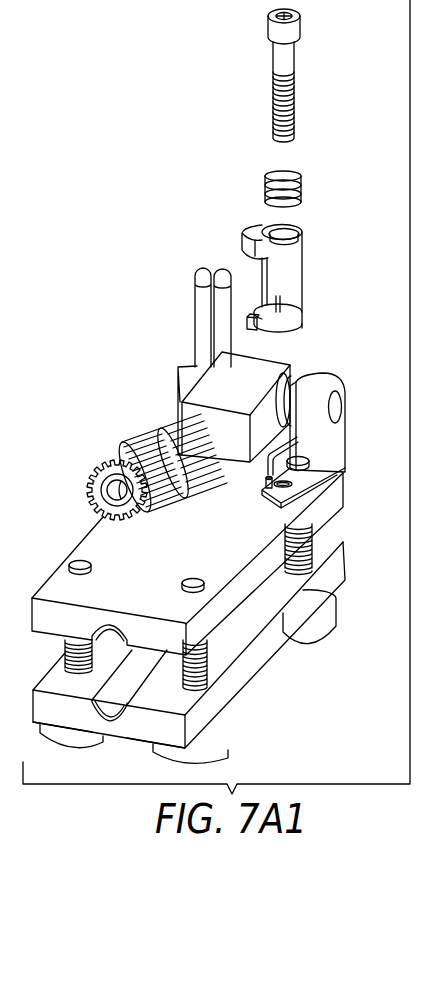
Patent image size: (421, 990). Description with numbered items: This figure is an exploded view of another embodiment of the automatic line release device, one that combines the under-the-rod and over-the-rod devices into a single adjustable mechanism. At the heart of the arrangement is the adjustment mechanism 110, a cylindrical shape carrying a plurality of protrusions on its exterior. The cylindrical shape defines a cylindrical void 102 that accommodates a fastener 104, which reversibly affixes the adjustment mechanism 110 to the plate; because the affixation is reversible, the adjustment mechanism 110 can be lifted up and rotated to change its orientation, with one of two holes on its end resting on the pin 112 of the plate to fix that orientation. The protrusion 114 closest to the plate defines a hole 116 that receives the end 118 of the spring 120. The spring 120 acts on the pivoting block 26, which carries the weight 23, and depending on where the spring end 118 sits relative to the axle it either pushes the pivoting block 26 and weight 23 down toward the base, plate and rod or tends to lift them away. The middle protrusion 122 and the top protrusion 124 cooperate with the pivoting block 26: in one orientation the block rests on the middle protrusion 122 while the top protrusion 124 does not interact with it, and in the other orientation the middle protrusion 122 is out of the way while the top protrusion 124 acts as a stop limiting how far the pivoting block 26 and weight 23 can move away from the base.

The weight 23 is at (128, 447).
The pivoting block 26 is at (203, 388).
The cylindrical void 102 is at (283, 232).
The fastener 104 is at (280, 62).
The adjustment mechanism 110 is at (305, 267).
The pin 112 is at (252, 491).
The protrusion 114 is at (247, 326).
The hole 116 is at (250, 318).
The end of spring 118 is at (263, 479).
The spring 120 is at (300, 375).
The middle protrusion 122 is at (277, 308).
The top protrusion 124 is at (243, 236).